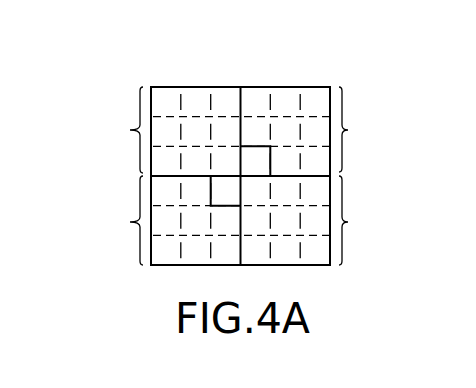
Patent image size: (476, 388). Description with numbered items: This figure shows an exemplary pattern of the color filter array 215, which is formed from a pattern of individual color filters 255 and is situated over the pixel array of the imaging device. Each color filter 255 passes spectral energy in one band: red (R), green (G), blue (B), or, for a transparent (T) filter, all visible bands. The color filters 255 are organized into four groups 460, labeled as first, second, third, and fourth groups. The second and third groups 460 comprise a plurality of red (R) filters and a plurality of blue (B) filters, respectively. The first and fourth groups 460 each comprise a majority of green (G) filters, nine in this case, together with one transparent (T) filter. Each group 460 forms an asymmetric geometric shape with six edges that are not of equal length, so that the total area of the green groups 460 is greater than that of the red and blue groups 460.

The color filter array 215 is at (324, 48).
The color filter 255 is at (157, 91).
The group 460 is at (130, 130).